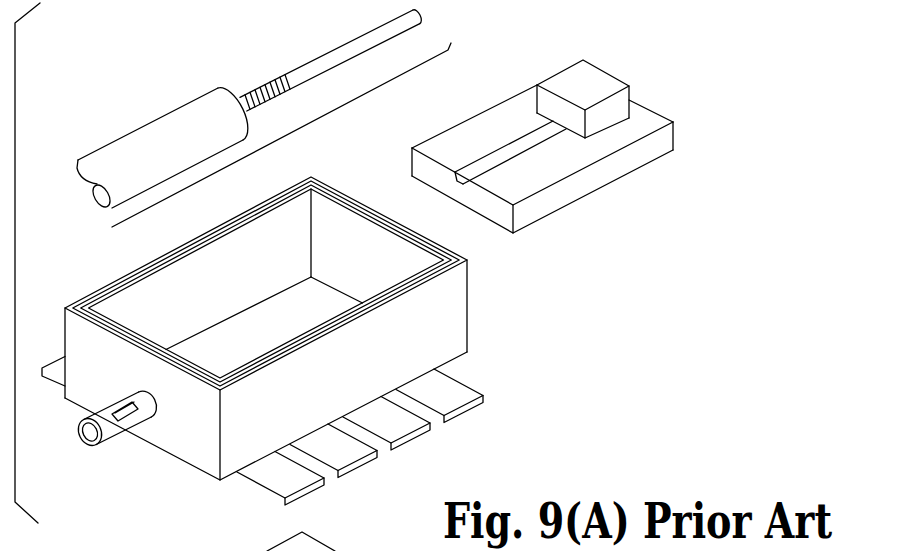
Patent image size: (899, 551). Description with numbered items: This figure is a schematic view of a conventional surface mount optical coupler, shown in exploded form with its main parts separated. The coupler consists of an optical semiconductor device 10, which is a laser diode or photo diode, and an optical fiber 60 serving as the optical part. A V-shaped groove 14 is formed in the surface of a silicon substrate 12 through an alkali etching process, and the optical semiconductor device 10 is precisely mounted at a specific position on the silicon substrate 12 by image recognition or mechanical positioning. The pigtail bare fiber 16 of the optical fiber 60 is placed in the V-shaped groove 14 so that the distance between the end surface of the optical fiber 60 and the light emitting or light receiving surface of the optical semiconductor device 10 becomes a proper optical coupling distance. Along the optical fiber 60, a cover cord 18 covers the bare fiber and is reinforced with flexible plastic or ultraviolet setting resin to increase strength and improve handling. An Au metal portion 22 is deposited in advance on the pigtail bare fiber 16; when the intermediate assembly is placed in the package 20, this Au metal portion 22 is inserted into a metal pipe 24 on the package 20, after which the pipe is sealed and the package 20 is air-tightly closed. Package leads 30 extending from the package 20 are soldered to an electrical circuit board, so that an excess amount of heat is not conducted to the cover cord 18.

The optical semiconductor device 10 is at (592, 83).
The silicon substrate 12 is at (645, 152).
The V-shaped groove 14 is at (513, 148).
The pigtail bare fiber 16 is at (327, 66).
The cover cord 18 is at (160, 143).
The Au metal portion 22 is at (263, 93).
The optical fiber 60 is at (289, 134).
The package 20 is at (373, 368).
The metal pipe 24 is at (112, 427).
The package leads 30 is at (462, 387).